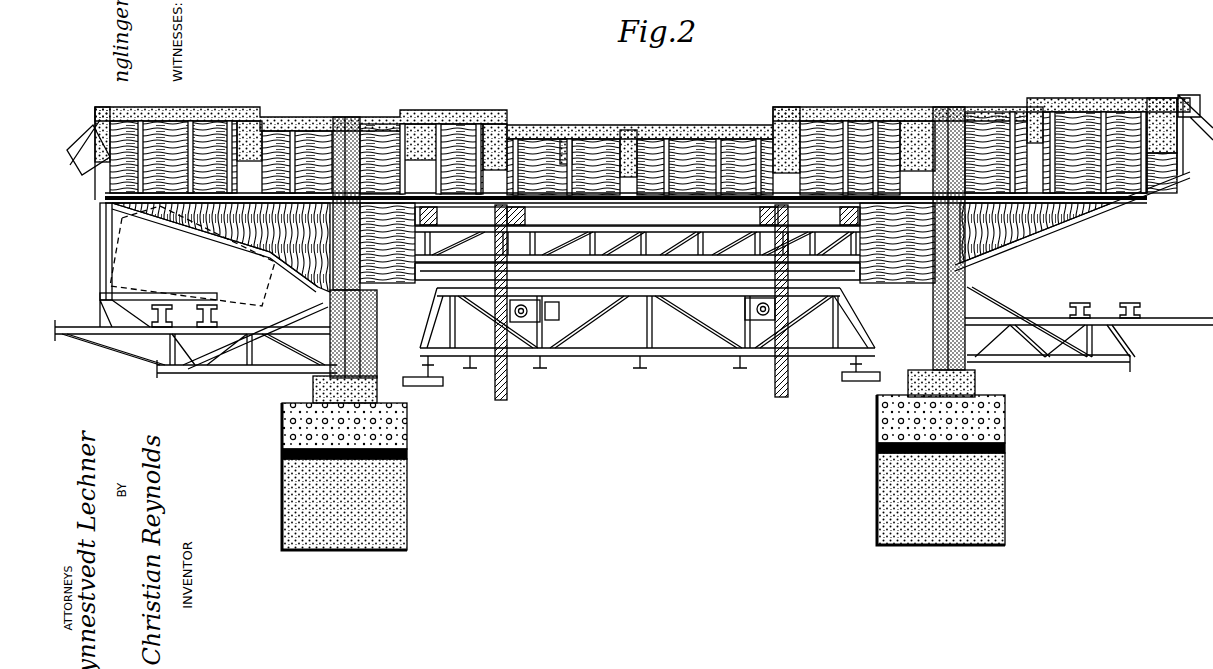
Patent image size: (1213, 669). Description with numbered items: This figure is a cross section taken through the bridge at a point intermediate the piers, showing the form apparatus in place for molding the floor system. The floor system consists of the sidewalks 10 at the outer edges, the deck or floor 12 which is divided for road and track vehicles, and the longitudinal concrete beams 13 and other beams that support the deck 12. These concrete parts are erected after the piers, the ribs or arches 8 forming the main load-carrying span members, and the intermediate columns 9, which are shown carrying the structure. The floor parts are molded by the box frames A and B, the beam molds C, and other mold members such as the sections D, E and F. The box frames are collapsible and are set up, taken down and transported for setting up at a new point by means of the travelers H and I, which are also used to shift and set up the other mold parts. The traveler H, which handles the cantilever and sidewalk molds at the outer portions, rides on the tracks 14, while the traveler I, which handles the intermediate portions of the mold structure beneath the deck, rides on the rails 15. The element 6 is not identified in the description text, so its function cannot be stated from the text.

The sidewalks 10 is at (214, 107).
The deck 12 is at (490, 110).
The longitudinal concrete beams 13 is at (337, 118).
The tracks 14 is at (215, 318).
The rails 15 is at (430, 370).
The intermediate columns 9 is at (313, 386).
The ribs or arches 8 is at (393, 482).
The longitudinal beam 6 is at (692, 272).
The box frame A is at (178, 108).
The box frame B is at (626, 202).
The beam molds C is at (532, 132).
The mold section D is at (402, 121).
The mold section E is at (368, 120).
The mold section F is at (192, 256).
The traveler H is at (140, 302).
The traveler I is at (588, 362).